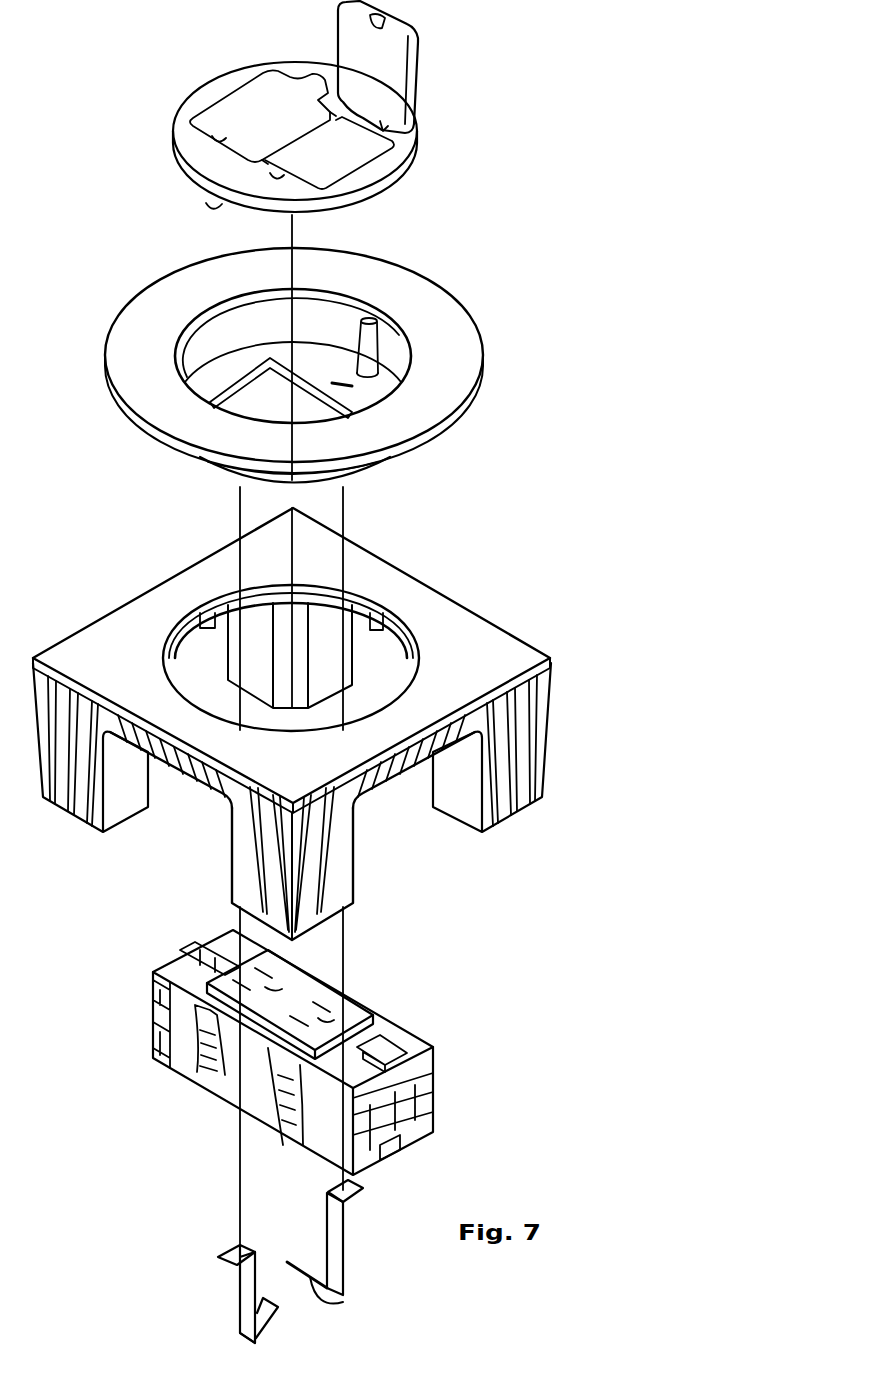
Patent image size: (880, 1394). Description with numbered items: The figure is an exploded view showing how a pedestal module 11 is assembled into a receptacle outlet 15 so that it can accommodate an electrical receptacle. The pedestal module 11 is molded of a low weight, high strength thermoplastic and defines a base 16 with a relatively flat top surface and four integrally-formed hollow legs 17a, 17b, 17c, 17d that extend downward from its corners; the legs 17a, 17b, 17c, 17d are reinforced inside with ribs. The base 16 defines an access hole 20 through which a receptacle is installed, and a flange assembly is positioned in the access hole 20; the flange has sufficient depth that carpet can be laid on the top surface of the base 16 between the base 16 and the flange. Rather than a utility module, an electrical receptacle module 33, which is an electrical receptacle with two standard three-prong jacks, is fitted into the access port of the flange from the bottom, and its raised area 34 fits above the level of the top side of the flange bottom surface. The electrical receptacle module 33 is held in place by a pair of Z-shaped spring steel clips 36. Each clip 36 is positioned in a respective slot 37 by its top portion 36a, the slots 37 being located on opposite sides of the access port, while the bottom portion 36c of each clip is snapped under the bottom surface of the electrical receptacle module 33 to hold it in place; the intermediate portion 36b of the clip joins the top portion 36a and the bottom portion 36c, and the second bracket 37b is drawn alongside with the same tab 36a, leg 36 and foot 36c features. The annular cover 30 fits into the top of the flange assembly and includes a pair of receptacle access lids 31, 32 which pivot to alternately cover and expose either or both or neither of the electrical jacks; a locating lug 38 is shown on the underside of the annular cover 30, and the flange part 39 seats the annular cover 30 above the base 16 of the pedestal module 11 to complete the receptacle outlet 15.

The pedestal module 11 is at (361, 724).
The receptacle outlet 15 is at (361, 724).
The base 16 is at (123, 664).
The leg 17a is at (492, 805).
The leg 17b is at (343, 883).
The leg 17c is at (125, 800).
The leg 17d is at (258, 637).
The access hole 20 is at (367, 613).
The annular cover 30 is at (388, 182).
The receptacle access lid 31 is at (393, 78).
The receptacle access lid 32 is at (247, 110).
The electrical receptacle module 33 is at (417, 1045).
The raised area 34 is at (357, 1010).
The Z-shaped spring steel clip 36 is at (343, 1248).
The top portion of clip 36a is at (350, 1184).
The bracket leg 36b is at (337, 1222).
The bottom portion of clip 36c is at (343, 1305).
The slot 37 is at (338, 377).
The mounting bracket 37b is at (245, 1290).
The locating lug 38 is at (215, 206).
The trim ring 39 is at (375, 343).